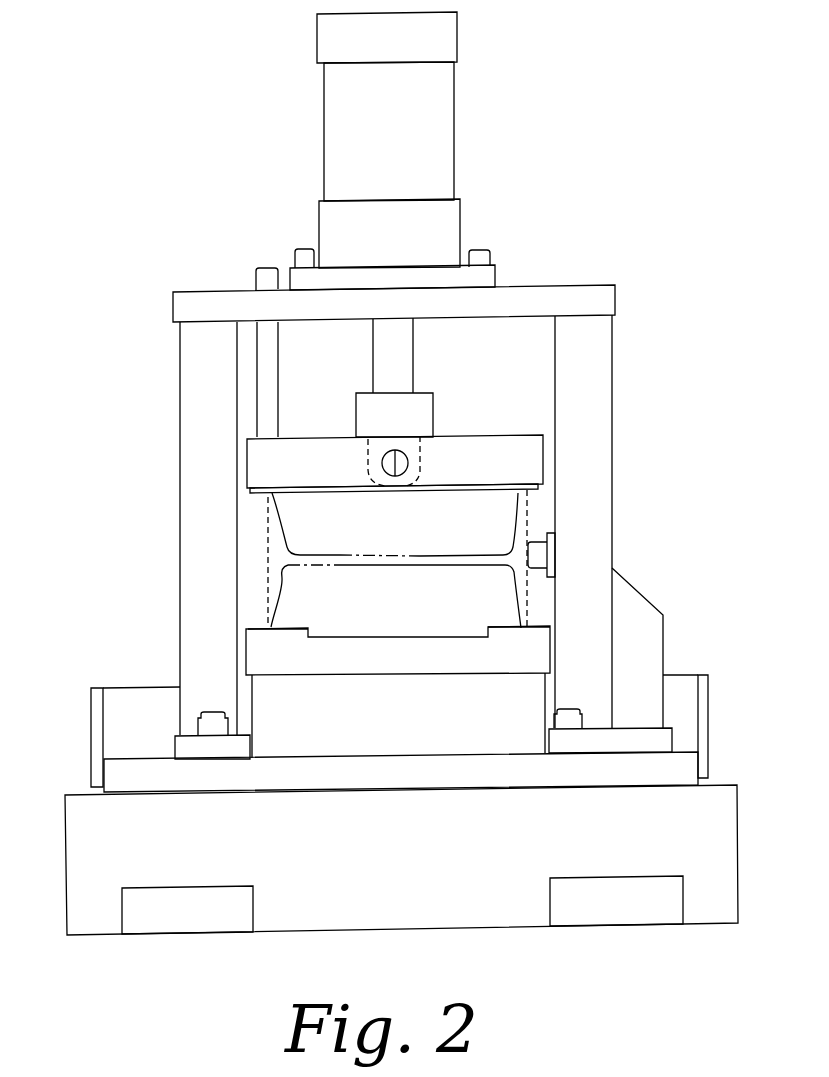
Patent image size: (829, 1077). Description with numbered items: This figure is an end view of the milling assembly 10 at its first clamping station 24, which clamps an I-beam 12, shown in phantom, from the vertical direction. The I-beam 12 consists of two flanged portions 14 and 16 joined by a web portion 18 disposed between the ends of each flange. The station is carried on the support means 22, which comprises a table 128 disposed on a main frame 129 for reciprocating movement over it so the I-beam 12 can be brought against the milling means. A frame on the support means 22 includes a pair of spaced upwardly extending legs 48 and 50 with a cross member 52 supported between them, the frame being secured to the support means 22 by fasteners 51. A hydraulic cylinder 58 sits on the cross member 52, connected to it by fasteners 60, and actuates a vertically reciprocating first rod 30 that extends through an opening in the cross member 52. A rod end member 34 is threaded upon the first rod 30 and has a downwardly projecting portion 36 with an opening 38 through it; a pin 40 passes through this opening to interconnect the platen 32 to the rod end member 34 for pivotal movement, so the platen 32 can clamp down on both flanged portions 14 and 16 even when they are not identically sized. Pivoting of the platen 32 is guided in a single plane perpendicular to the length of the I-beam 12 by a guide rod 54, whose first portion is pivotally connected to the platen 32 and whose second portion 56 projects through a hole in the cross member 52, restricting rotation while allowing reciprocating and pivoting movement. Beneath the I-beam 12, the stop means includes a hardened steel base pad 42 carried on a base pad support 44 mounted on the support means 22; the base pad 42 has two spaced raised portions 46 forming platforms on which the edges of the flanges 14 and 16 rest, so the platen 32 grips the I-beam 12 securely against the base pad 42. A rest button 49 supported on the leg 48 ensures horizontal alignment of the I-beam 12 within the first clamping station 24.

The milling assembly 10 is at (609, 268).
The I-beam 12 is at (534, 508).
The flanged portion 14 is at (527, 598).
The flanged portion 16 is at (270, 602).
The web portion 18 is at (418, 557).
The support means 22 is at (745, 826).
The first clamping station 24 is at (618, 382).
The first rod 30 is at (400, 342).
The platen 32 is at (312, 452).
The rod end member 34 is at (430, 403).
The downwardly projecting portion 36 is at (420, 458).
The opening 38 is at (393, 457).
The pin 40 is at (397, 470).
The base pad 42 is at (535, 650).
The base pad support 44 is at (480, 733).
The raised portions 46 is at (308, 630).
The leg 48 is at (602, 455).
The rest button 49 is at (537, 548).
The leg 50 is at (198, 480).
The fasteners 51 is at (213, 712).
The cross member 52 is at (183, 300).
The guide rod 54 is at (267, 343).
The second portion 56 is at (260, 268).
The hydraulic cylinder 58 is at (442, 137).
The fasteners 60 is at (295, 248).
The table 128 is at (77, 822).
The main frame 129 is at (582, 910).